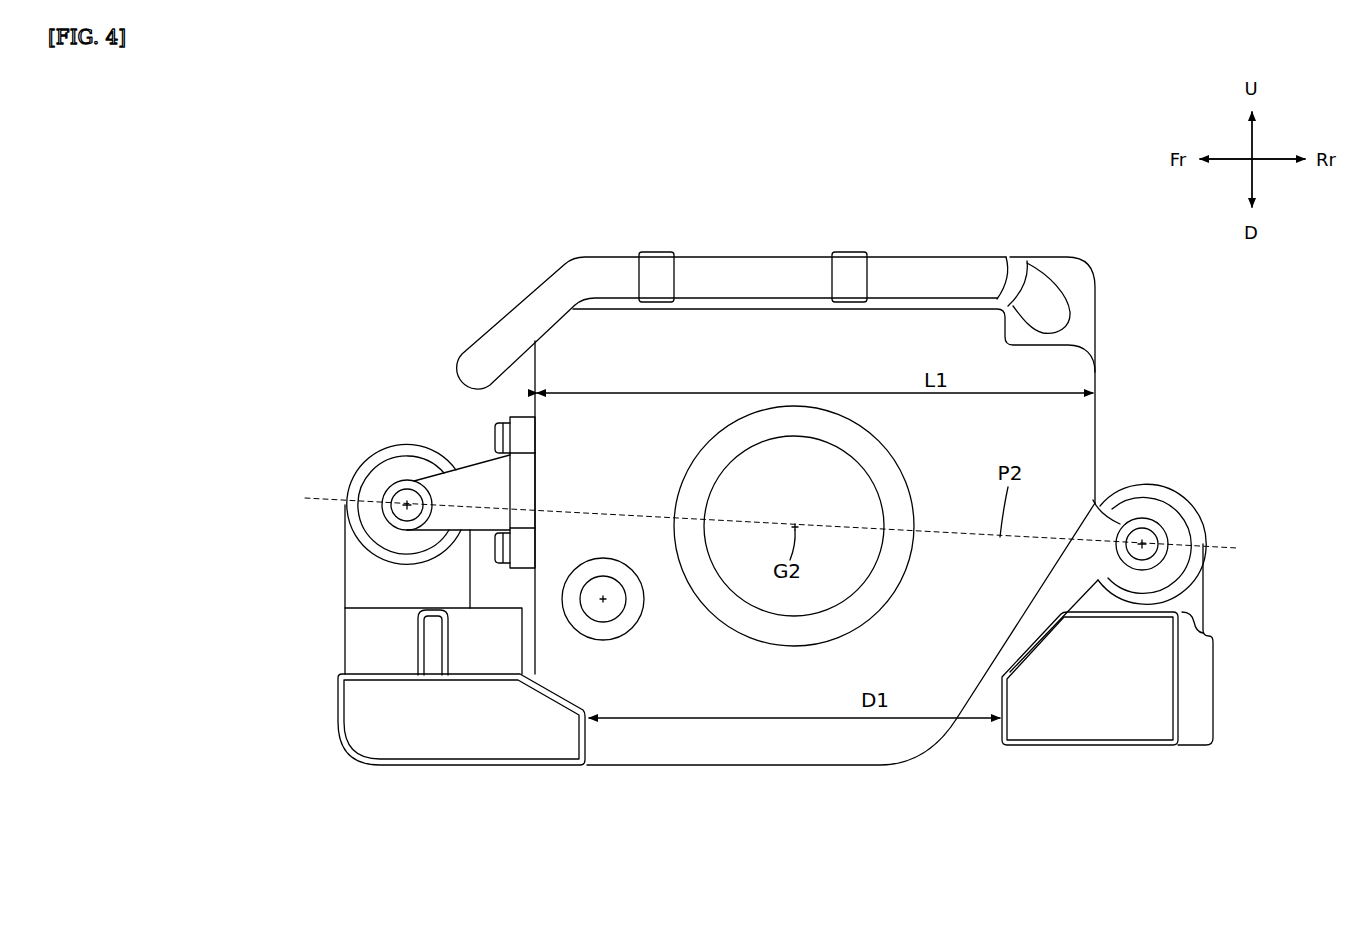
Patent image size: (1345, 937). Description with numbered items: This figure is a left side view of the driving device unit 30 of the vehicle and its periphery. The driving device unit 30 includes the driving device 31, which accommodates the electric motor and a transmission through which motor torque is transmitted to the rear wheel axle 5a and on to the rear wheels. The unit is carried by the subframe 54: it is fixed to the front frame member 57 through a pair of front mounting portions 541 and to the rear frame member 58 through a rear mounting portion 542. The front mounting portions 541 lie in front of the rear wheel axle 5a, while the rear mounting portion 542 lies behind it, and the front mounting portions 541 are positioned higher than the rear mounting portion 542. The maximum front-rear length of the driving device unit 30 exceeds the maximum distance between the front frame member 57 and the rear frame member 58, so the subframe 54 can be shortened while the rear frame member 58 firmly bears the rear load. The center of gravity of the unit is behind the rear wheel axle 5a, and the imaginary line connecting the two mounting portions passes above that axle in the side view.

The driving device unit 30 is at (1098, 360).
The driving device 31 is at (587, 380).
The rear wheel axle 5a is at (604, 602).
The subframe 54 is at (1217, 678).
The front mounting portions 541 is at (378, 527).
The rear mounting portion 542 is at (1170, 523).
The front frame member 57 is at (470, 770).
The rear frame member 58 is at (1118, 748).